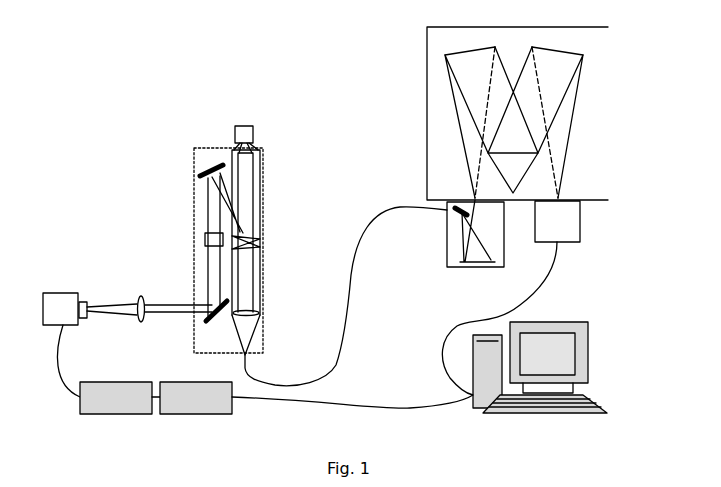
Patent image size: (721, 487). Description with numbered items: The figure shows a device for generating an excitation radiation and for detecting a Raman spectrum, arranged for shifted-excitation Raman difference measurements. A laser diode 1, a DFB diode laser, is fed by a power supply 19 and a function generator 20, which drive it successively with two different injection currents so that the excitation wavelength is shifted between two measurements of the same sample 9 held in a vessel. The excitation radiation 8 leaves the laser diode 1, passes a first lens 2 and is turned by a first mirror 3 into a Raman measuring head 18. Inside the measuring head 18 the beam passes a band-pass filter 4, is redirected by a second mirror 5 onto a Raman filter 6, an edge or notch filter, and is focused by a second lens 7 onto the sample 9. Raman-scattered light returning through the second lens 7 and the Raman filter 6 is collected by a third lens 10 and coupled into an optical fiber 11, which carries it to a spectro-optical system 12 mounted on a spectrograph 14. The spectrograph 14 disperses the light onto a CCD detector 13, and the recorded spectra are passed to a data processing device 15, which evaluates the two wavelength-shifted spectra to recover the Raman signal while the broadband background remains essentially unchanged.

The laser diode 1 is at (62, 292).
The first lens 2 is at (139, 296).
The first mirror 3 is at (204, 303).
The band-pass filter 4 is at (204, 237).
The second mirror 5 is at (195, 174).
The Raman filter 6 is at (262, 242).
The second lens 7 is at (263, 156).
The excitation radiation 8 is at (233, 147).
The sample 9 is at (243, 125).
The third lens 10 is at (263, 314).
The optical fiber 11 is at (408, 207).
The spectro-optical system 12 is at (447, 236).
The CCD detector 13 is at (580, 227).
The spectrograph 14 is at (609, 113).
The data processing device 15 is at (473, 338).
The Raman measuring head 18 is at (193, 148).
The power supply 19 is at (118, 383).
The function generator 20 is at (183, 383).